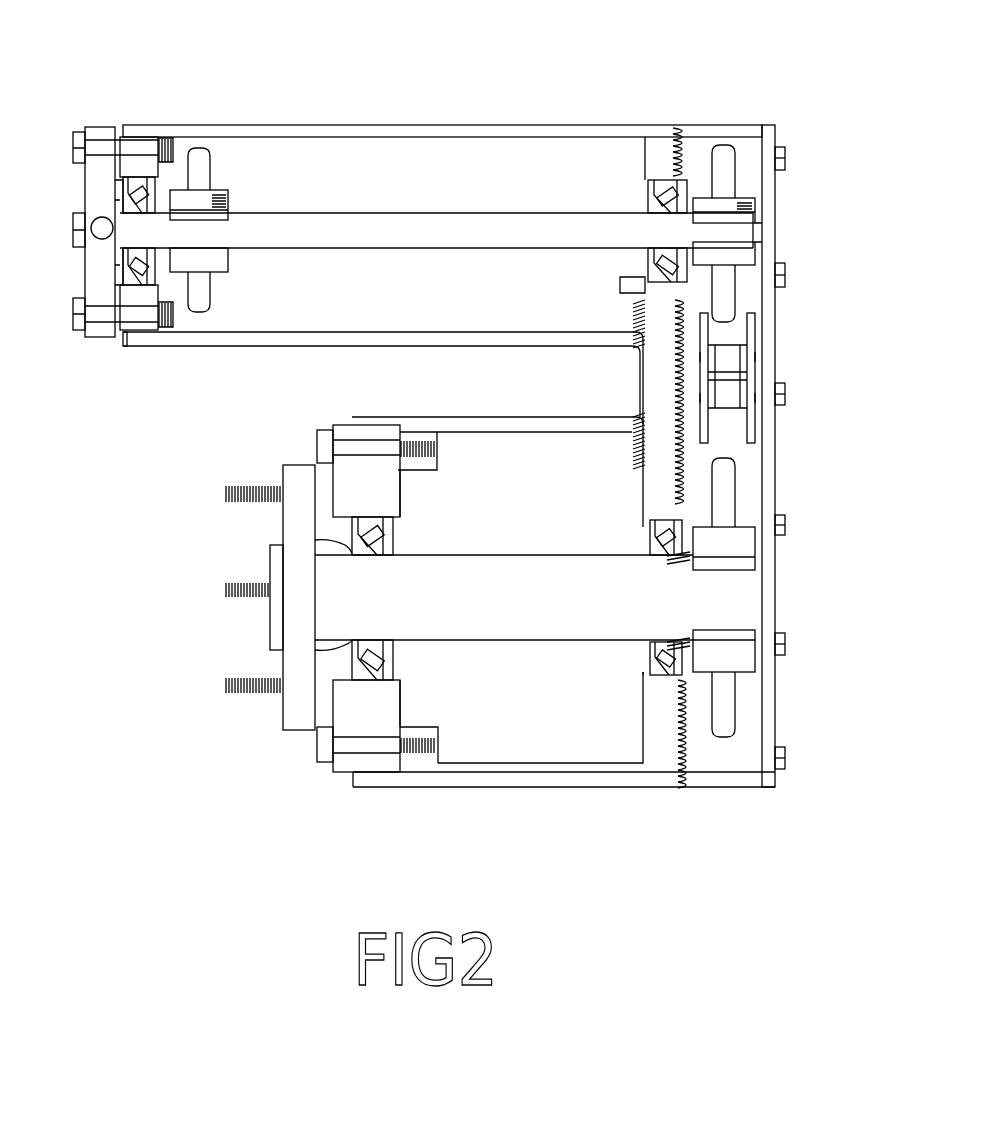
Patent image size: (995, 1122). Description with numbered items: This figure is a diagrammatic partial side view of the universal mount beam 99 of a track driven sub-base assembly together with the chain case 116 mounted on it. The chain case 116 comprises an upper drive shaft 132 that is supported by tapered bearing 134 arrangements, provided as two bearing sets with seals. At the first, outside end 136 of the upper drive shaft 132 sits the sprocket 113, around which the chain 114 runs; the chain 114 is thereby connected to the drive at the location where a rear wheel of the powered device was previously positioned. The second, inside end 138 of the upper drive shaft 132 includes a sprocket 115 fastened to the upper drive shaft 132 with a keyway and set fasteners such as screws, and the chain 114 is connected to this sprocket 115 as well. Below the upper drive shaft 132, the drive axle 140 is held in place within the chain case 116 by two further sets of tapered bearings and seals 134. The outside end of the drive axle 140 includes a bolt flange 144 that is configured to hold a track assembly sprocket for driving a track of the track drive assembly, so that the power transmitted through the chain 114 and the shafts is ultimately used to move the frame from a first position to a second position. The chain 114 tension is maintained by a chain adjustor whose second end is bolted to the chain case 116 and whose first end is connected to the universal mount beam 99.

The universal mount beam 99 is at (86, 128).
The sprocket 113 is at (210, 160).
The chain 114 is at (753, 358).
The sprocket 115 is at (718, 147).
The chain case 116 is at (461, 125).
The upper drive shaft 132 is at (420, 212).
The tapered bearing 134 is at (158, 193).
The first (outside) end 136 is at (127, 233).
The second (inside) end 138 is at (755, 232).
The drive axle 140 is at (752, 625).
The bolt flange 144 is at (270, 618).